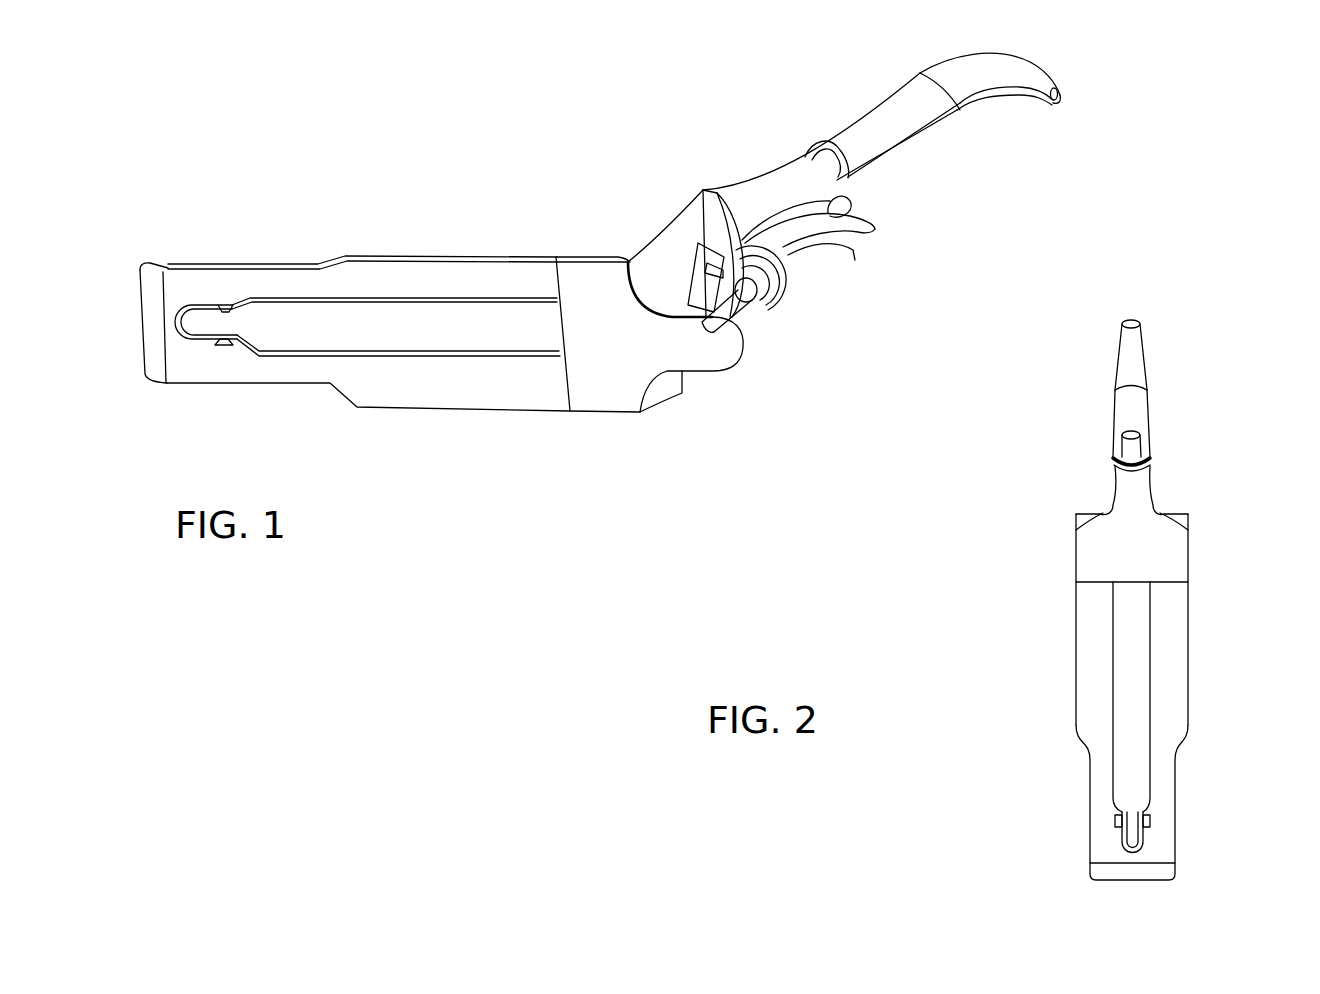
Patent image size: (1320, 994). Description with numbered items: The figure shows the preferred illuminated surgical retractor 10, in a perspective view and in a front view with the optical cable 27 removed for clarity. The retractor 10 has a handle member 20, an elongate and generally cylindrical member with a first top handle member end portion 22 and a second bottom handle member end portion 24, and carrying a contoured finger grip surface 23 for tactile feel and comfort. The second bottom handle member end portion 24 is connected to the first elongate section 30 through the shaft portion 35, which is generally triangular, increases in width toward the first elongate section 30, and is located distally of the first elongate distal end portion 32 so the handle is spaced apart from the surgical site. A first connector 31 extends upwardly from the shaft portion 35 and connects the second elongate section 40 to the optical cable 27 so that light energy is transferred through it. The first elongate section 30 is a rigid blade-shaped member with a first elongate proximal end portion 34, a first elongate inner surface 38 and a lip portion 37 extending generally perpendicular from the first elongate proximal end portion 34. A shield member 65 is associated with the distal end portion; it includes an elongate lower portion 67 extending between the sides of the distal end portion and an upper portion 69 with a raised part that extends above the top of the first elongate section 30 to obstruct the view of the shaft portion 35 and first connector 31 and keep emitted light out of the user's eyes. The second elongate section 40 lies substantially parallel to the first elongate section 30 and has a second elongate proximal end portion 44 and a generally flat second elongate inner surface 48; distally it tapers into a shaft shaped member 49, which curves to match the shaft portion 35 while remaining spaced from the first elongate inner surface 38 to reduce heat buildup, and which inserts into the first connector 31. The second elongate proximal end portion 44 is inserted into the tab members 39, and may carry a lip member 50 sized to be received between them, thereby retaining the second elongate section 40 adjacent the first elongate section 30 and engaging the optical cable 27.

In FIG. 1, the illuminated surgical retractor 10 is at (493, 223).
In FIG. 1, the handle member 20 is at (893, 83).
In FIG. 2, the handle member 20 is at (1117, 390).
In FIG. 1, the first top handle member end portion 22 is at (968, 92).
In FIG. 2, the first top handle member end portion 22 is at (1135, 347).
In FIG. 1, the finger grip surface 23 is at (853, 210).
In FIG. 2, the finger grip surface 23 is at (1142, 443).
In FIG. 1, the second bottom handle member end portion 24 is at (780, 183).
In FIG. 1, the optical cable 27 is at (820, 237).
In FIG. 1, the first elongate section 30 is at (380, 255).
In FIG. 2, the first elongate section 30 is at (1167, 633).
In FIG. 1, the first connector 31 is at (783, 273).
In FIG. 1, the first elongate distal end portion 32 is at (647, 268).
In FIG. 2, the first elongate distal end portion 32 is at (1076, 600).
In FIG. 1, the first elongate proximal end portion 34 is at (270, 282).
In FIG. 2, the first elongate proximal end portion 34 is at (1090, 817).
In FIG. 1, the shaft portion 35 is at (697, 225).
In FIG. 1, the lip portion 37 is at (158, 370).
In FIG. 2, the lip portion 37 is at (1097, 868).
In FIG. 1, the first elongate inner surface 38 is at (483, 393).
In FIG. 2, the first elongate inner surface 38 is at (1097, 677).
In FIG. 1, the tab members 39 is at (225, 302).
In FIG. 2, the tab members 39 is at (1120, 817).
In FIG. 1, the second elongate section 40 is at (293, 352).
In FIG. 2, the second elongate section 40 is at (1142, 692).
In FIG. 1, the second elongate proximal end portion 44 is at (198, 326).
In FIG. 2, the second elongate proximal end portion 44 is at (1132, 847).
In FIG. 1, the second elongate inner surface 48 is at (373, 323).
In FIG. 2, the second elongate inner surface 48 is at (1128, 747).
In FIG. 1, the shaft shaped member 49 is at (733, 310).
In FIG. 1, the lip member 50 is at (197, 303).
In FIG. 2, the lip member 50 is at (1120, 838).
In FIG. 1, the shield member 65 is at (617, 414).
In FIG. 2, the shield member 65 is at (1076, 547).
In FIG. 1, the elongate lower portion 67 is at (597, 292).
In FIG. 2, the elongate lower portion 67 is at (1167, 553).
In FIG. 1, the upper portion 69 is at (725, 357).
In FIG. 2, the upper portion 69 is at (1137, 490).